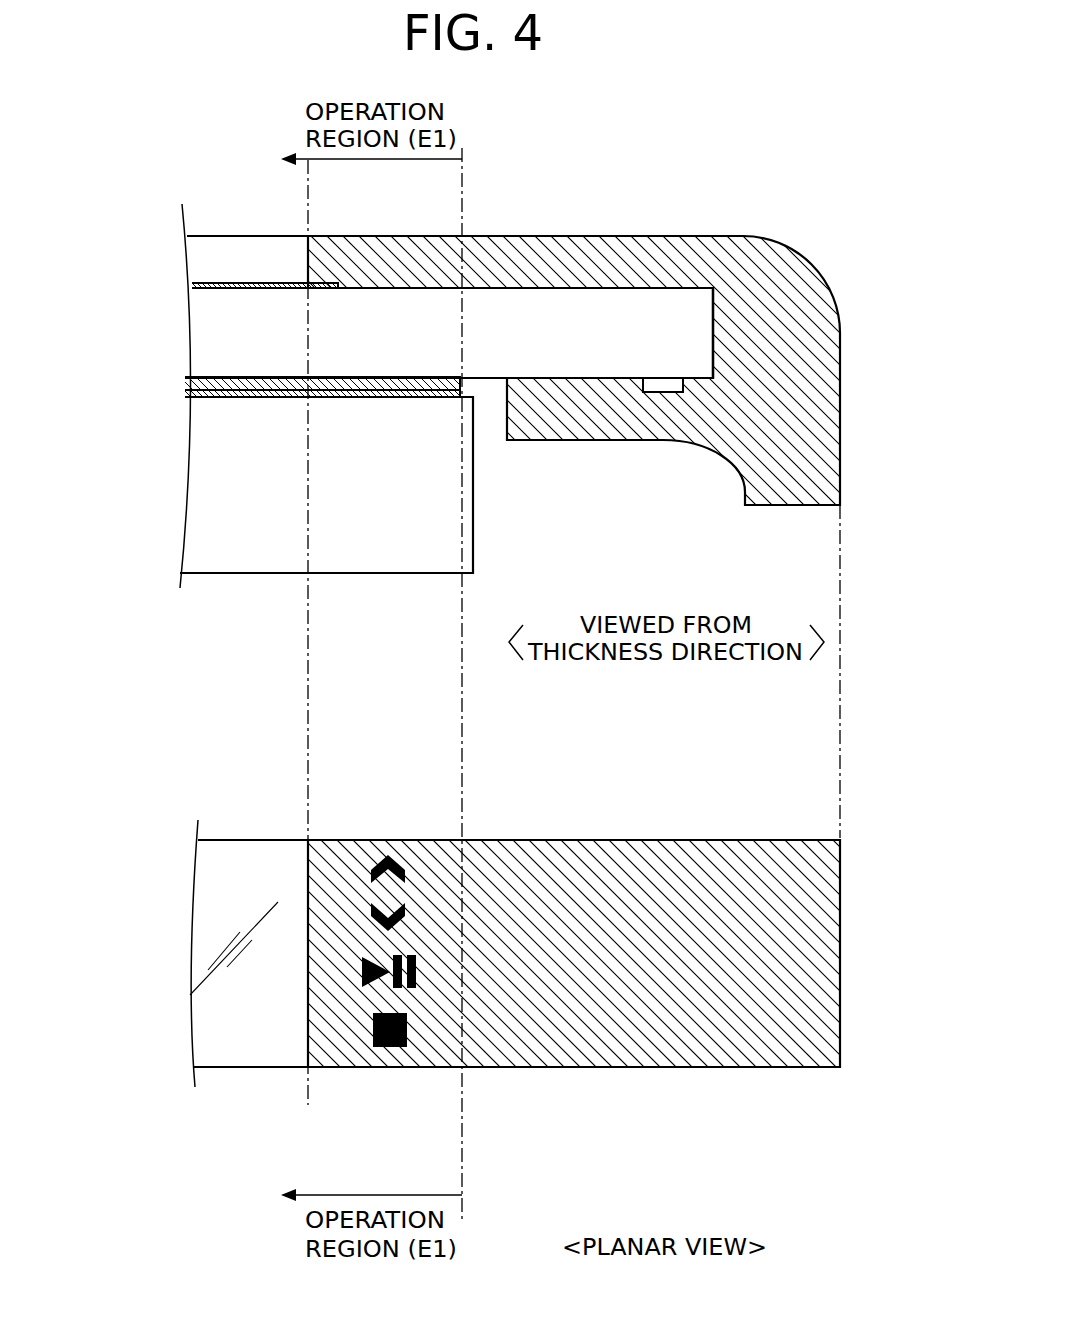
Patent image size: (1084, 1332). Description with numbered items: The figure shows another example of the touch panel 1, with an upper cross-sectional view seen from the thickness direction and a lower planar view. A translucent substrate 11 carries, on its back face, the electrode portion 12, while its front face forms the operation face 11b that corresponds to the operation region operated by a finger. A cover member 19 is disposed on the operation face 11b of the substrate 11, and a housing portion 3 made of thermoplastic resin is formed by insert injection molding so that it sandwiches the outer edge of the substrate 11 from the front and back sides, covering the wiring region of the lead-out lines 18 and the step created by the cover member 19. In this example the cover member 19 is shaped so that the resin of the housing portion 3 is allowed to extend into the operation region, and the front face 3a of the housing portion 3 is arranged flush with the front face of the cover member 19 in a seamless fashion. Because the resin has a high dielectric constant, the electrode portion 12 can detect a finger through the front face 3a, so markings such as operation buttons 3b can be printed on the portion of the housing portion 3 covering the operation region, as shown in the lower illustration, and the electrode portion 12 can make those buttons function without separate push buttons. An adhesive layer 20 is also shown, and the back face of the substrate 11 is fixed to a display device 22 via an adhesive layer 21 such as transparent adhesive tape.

The touch panel 1 is at (797, 164).
The housing portion 3 is at (820, 286).
The front face 3a is at (584, 238).
The operation button 3b is at (421, 874).
The substrate 11 is at (213, 325).
The operation face 11b is at (374, 290).
The electrode portion 12 is at (186, 388).
The lead-out line 18 is at (662, 393).
The cover member 19 is at (198, 258).
The adhesive layer 20 is at (297, 283).
The adhesive layer 21 is at (345, 397).
The display device 22 is at (408, 575).